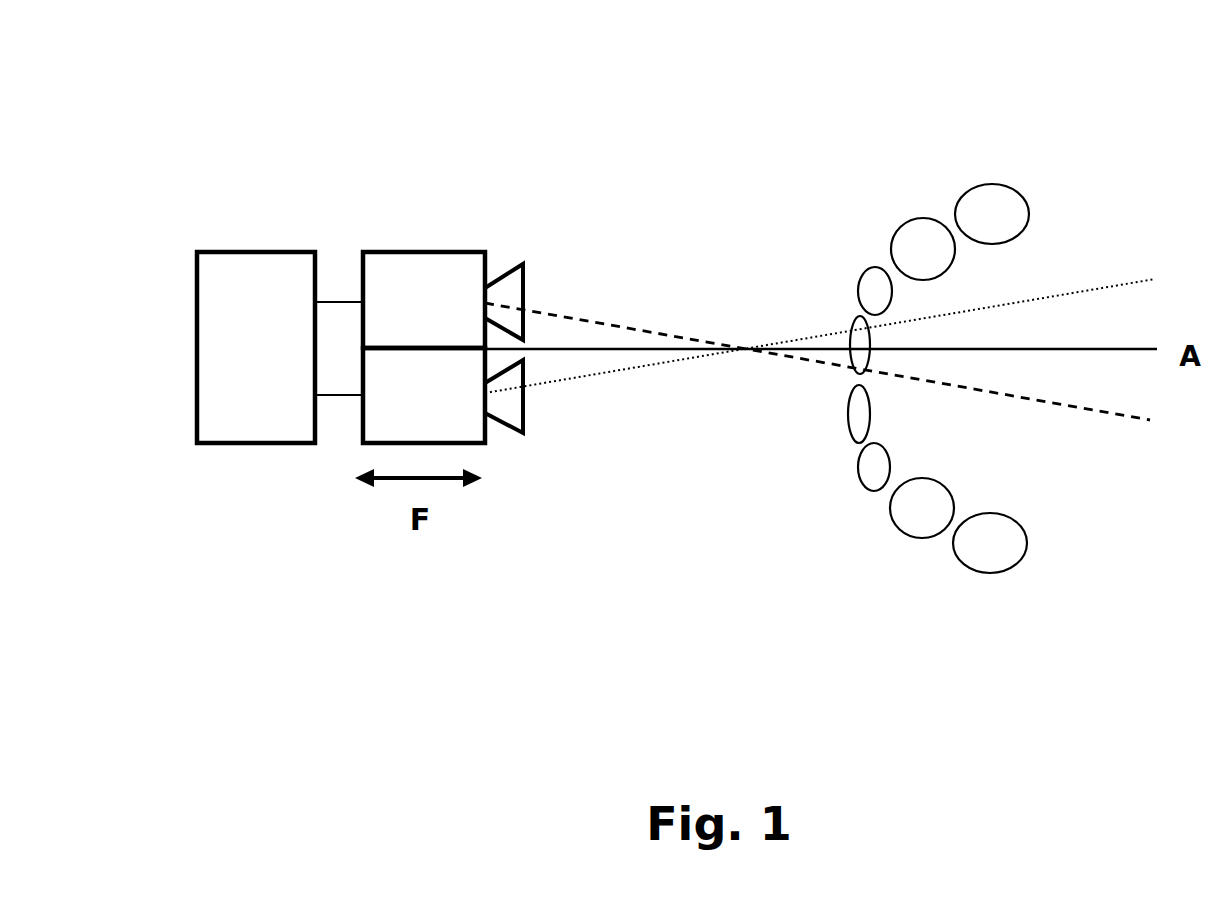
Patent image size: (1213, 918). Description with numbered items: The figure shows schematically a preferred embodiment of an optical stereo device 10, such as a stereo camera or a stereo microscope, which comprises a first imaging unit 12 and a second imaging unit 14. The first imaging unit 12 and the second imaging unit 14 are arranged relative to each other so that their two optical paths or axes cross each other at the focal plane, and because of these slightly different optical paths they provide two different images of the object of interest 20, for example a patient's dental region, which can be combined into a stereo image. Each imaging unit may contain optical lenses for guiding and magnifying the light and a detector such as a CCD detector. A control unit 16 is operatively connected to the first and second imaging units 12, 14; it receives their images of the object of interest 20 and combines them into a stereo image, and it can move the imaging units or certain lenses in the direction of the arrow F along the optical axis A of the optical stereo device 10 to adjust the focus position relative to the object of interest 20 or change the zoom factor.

The optical stereo device 10 is at (293, 158).
The first imaging unit 12 is at (402, 418).
The second imaging unit 14 is at (402, 313).
The control unit 16 is at (232, 358).
The object of interest 20 is at (955, 135).